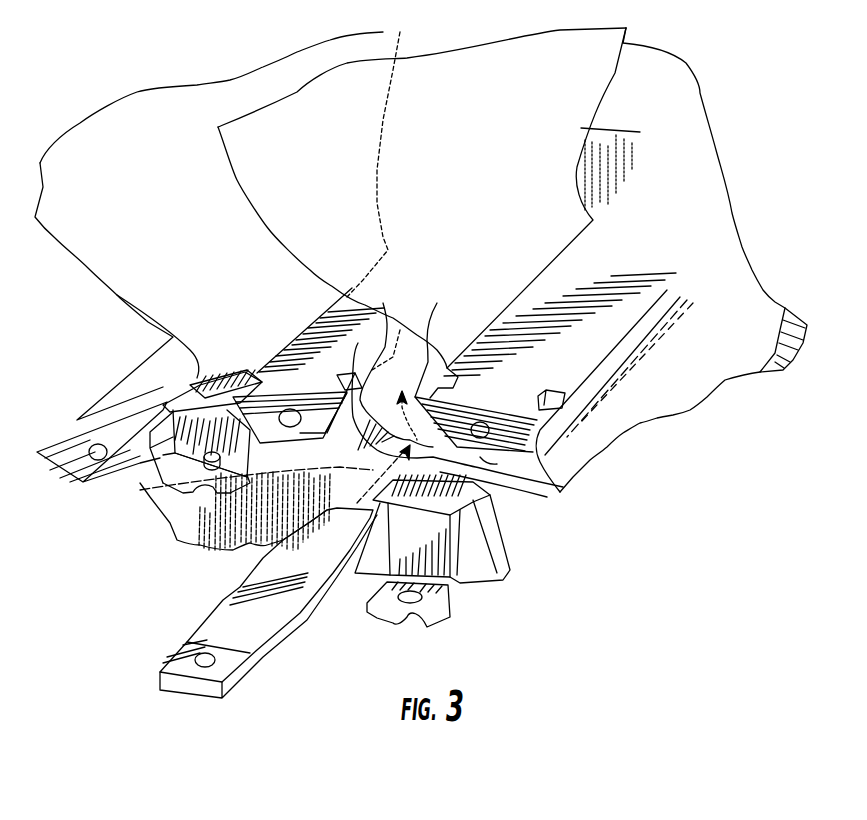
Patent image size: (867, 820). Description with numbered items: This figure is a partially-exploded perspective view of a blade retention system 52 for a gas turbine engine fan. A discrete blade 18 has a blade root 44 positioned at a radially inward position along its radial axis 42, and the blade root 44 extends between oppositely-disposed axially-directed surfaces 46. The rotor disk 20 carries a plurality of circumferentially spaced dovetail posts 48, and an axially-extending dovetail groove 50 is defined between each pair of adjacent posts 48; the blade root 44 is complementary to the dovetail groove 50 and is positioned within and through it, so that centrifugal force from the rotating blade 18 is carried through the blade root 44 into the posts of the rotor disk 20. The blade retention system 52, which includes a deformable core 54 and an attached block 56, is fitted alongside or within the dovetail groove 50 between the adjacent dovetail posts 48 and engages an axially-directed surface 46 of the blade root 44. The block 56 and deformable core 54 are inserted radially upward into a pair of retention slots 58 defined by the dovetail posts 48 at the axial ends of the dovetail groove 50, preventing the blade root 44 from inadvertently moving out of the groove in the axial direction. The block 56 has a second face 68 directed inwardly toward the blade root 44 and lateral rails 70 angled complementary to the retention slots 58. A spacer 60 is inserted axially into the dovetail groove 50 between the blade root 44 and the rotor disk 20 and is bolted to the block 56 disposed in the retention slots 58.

The blade 18 is at (137, 92).
The rotor disk 20 is at (560, 492).
The radial axis 42 is at (380, 201).
The blade root 44 is at (400, 377).
The axially-directed surfaces 46 is at (402, 397).
The dovetail posts 48 is at (327, 315).
The dovetail groove 50 is at (480, 457).
The blade retention system 52 is at (165, 388).
The deformable core 54 is at (243, 373).
The block 56 is at (203, 370).
The retention slots 58 is at (365, 340).
The spacer 60 is at (217, 627).
The second face 68 is at (473, 567).
The lateral rails 70 is at (500, 540).